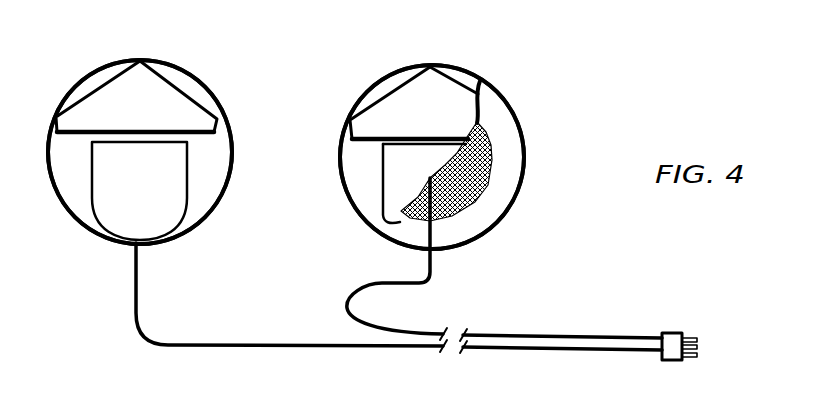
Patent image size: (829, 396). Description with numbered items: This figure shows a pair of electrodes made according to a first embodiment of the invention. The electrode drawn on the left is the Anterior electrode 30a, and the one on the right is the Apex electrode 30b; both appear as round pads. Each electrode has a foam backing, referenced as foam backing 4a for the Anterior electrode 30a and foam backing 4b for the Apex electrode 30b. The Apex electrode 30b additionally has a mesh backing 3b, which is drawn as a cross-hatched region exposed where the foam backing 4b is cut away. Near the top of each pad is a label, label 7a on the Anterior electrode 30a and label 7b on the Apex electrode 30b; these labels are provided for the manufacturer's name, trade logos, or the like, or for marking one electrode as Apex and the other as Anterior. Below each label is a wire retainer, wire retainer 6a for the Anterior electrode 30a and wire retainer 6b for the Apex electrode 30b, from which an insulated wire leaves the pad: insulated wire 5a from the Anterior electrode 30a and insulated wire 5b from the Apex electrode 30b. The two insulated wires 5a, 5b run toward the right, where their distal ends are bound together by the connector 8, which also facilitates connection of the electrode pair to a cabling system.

The Anterior electrode 30a is at (61, 91).
The foam backing 4a is at (178, 68).
The label 7a is at (125, 82).
The wire retainer 6a is at (125, 222).
The insulated wire 5a is at (263, 343).
The Apex electrode 30b is at (344, 98).
The foam backing 4b is at (482, 83).
The label 7b is at (398, 98).
The wire retainer 6b is at (392, 193).
The mesh backing 3b is at (490, 138).
The insulated wire 5b is at (393, 283).
The connector 8 is at (681, 333).